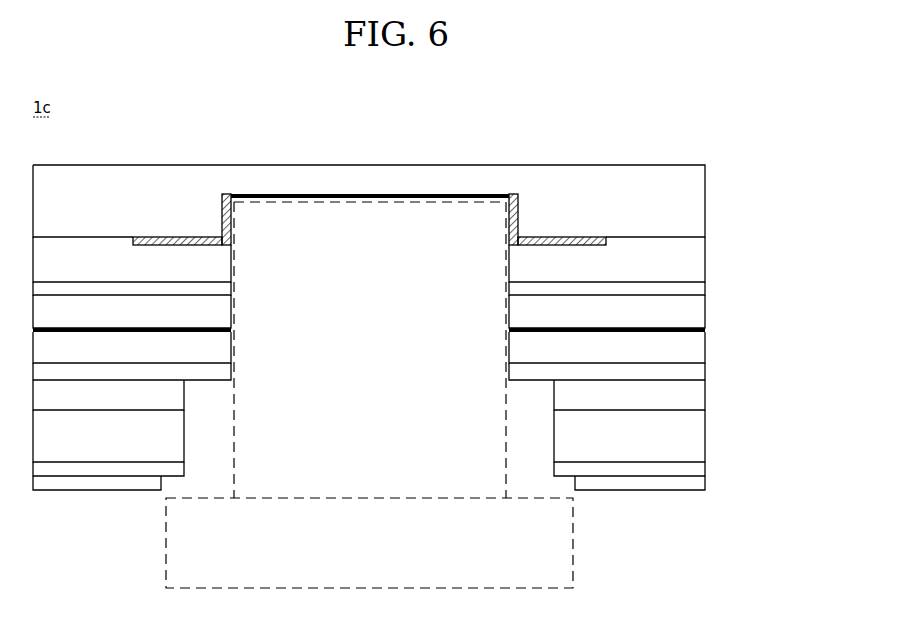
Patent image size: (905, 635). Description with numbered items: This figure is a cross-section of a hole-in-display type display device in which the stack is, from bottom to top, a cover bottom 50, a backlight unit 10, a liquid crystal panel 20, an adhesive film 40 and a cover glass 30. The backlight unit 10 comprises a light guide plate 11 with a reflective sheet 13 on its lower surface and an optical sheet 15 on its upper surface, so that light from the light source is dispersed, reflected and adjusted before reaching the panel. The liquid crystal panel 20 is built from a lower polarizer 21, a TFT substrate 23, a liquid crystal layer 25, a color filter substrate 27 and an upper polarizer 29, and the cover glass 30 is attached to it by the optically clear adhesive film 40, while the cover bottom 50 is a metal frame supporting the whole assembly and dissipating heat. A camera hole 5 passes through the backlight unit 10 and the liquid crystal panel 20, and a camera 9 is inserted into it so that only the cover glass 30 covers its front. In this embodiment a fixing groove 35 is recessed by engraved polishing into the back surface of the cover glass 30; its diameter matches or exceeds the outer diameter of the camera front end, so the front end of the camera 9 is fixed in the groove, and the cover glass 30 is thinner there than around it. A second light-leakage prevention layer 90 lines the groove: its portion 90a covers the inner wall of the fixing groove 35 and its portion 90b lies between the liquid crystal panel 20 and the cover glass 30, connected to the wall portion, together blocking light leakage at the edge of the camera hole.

The camera hole 5 is at (216, 426).
The camera 9 is at (575, 542).
The backlight unit 10 is at (782, 401).
The light guide plate 11 is at (708, 437).
The reflective sheet 13 is at (708, 468).
The optical sheet 15 is at (708, 400).
The liquid crystal panel 20 is at (782, 290).
The lower polarizer 21 is at (708, 374).
The TFT substrate 23 is at (708, 352).
The liquid crystal layer 25 is at (708, 329).
The color filter substrate 27 is at (708, 306).
The upper polarizer 29 is at (708, 288).
The cover glass 30 is at (708, 208).
The fixing groove 35 is at (368, 196).
The adhesive film 40 is at (708, 262).
The cover bottom 50 is at (708, 490).
The second light-leakage prevention layer 90 is at (369, 159).
The second light-leakage prevention layer 90a is at (228, 194).
The second light-leakage prevention layer 90b is at (172, 237).